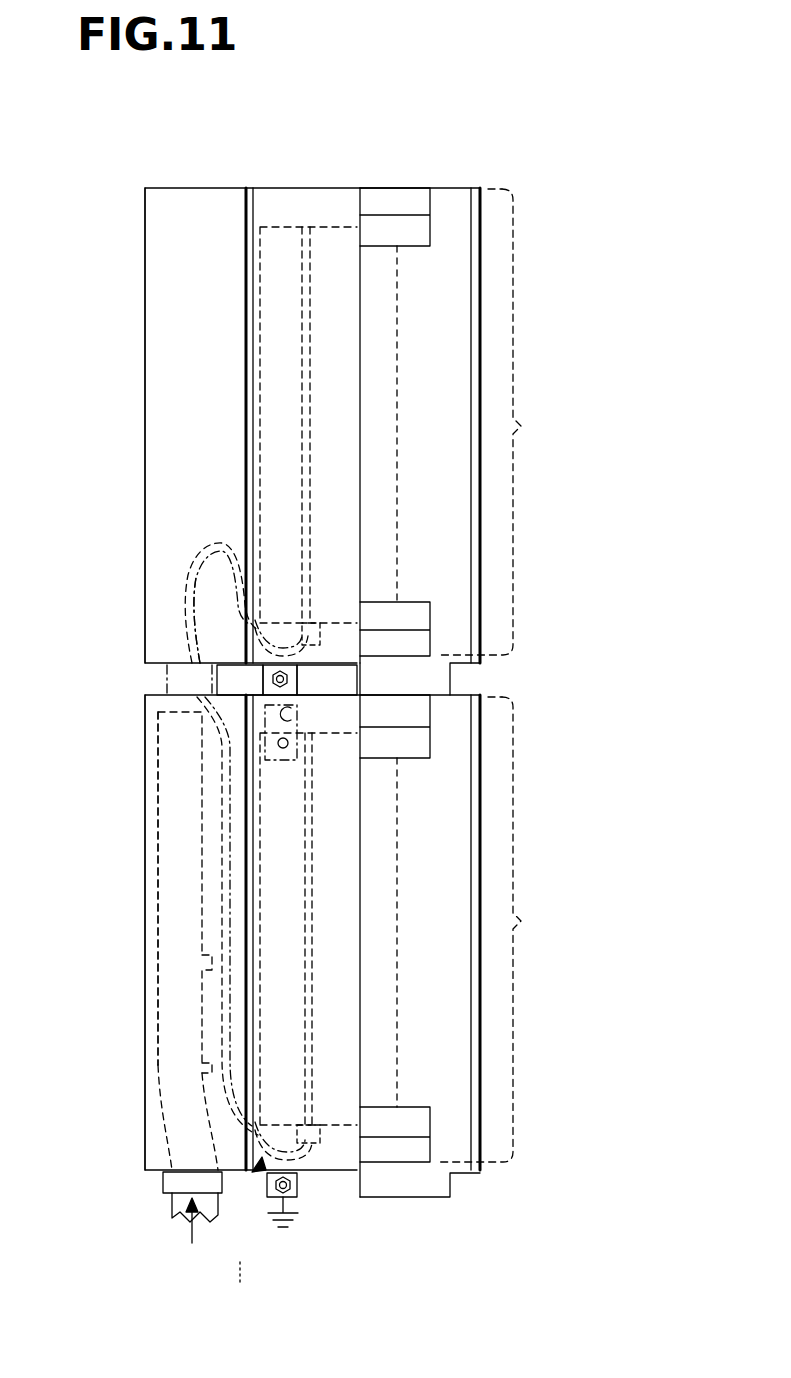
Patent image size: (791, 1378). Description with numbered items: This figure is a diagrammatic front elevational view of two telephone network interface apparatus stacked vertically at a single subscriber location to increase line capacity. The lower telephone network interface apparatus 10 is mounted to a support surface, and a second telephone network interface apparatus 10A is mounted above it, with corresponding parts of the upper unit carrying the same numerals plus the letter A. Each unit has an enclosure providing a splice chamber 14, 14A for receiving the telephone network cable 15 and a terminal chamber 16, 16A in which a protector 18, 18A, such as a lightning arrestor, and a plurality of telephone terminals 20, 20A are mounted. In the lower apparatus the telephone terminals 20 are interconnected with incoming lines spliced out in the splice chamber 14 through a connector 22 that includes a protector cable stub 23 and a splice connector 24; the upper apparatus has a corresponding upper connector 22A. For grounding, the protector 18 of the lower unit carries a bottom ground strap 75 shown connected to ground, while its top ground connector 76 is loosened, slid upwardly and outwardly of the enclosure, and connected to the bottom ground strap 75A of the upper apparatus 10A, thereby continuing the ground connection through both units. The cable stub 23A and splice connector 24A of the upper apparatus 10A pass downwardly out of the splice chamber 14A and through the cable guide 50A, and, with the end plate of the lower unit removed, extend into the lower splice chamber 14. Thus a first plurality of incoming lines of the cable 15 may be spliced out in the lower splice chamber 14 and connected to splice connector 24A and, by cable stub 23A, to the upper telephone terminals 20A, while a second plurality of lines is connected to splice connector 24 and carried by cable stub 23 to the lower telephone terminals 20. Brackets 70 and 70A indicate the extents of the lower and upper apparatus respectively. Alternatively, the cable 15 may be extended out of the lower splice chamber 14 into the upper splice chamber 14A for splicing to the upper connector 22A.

The telephone network interface apparatus 10 is at (562, 798).
The second telephone network interface apparatus 10A is at (535, 207).
The splice chamber 14 is at (158, 705).
The splice chamber 14A is at (203, 213).
The telephone network cable 15 is at (158, 928).
The terminal chamber 16 is at (340, 733).
The terminal chamber 16A is at (335, 226).
The protector 18 is at (285, 778).
The protector 18A is at (285, 237).
The telephone terminals 20 is at (328, 790).
The telephone terminals 20A is at (330, 264).
The connector 22 is at (259, 1170).
The upper connector 22A is at (207, 545).
The protector cable stub 23 is at (215, 1134).
The cable stub 23A is at (187, 588).
The splice connector 24 is at (205, 1048).
The splice connector 24A is at (214, 842).
The cable guide 50A is at (163, 680).
The module region 70 is at (526, 923).
The upper module region 70A is at (526, 427).
The bottom ground strap 75 is at (297, 1183).
The bottom ground strap 75A is at (298, 677).
The top ground connector 76 is at (258, 692).